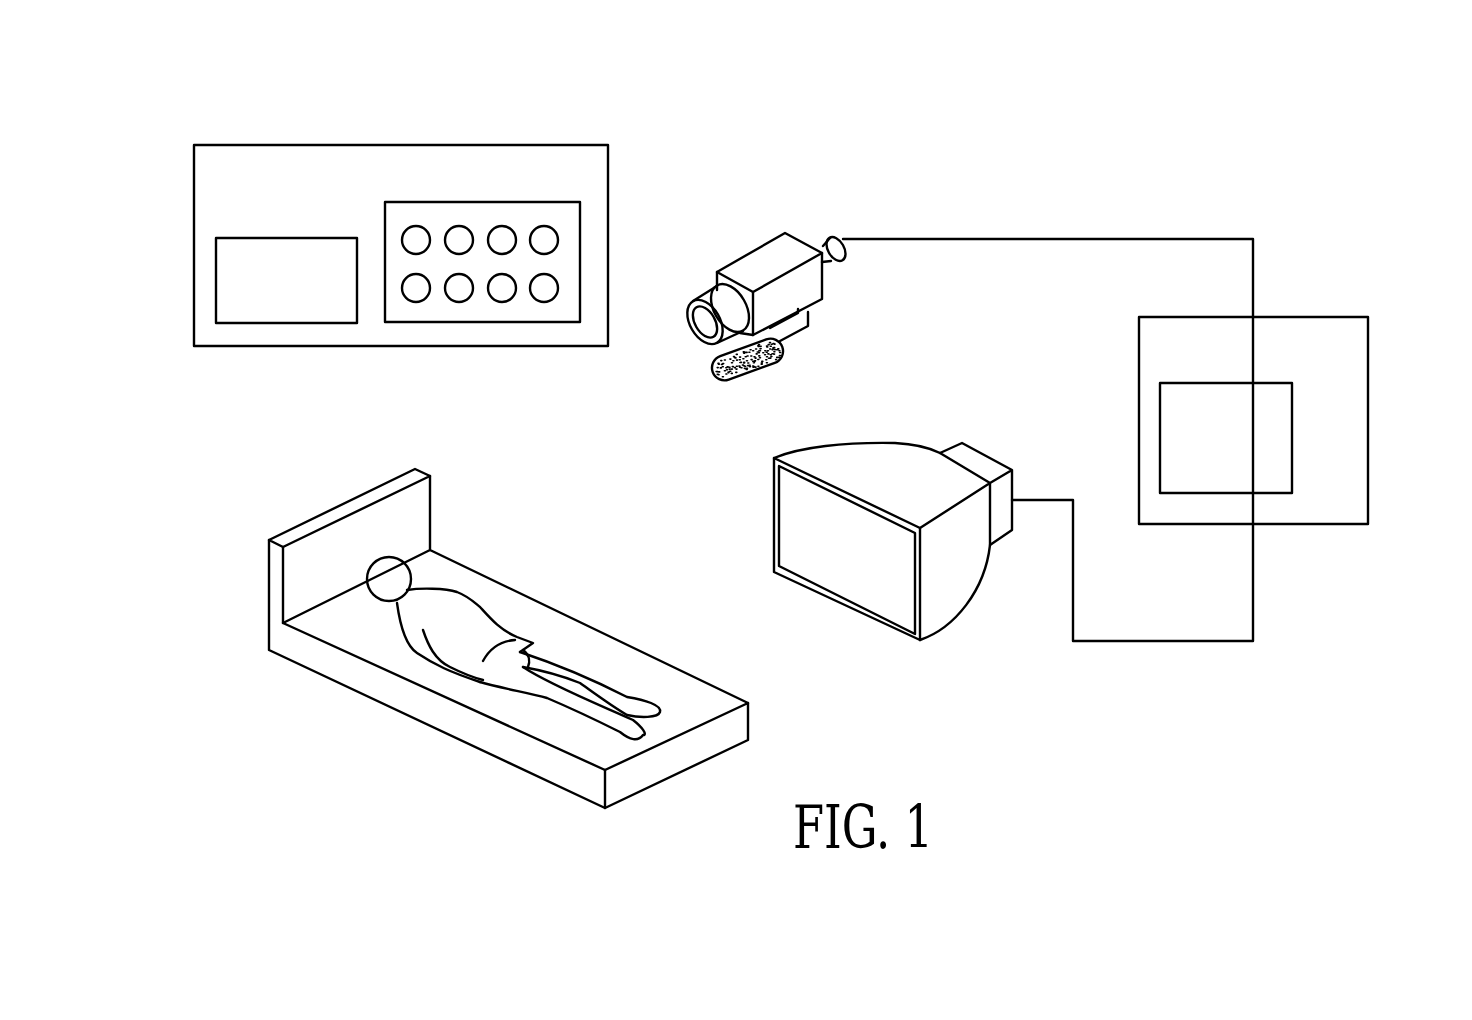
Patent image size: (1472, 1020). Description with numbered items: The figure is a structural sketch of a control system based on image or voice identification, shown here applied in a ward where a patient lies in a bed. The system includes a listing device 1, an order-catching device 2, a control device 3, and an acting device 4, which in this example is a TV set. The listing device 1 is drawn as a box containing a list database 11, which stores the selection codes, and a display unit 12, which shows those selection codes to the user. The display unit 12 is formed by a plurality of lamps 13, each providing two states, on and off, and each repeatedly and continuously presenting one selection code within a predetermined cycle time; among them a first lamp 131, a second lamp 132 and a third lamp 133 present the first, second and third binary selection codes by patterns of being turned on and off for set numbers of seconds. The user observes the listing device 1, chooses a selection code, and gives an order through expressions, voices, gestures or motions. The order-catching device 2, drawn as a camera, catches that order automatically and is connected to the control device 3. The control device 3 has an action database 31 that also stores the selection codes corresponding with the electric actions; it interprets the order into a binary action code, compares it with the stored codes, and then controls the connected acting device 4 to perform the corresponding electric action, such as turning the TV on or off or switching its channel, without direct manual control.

The listing device 1 is at (212, 152).
The list database 11 is at (215, 300).
The display unit 12 is at (523, 212).
The lamps 13 is at (468, 339).
The first lamp 131 is at (413, 295).
The second lamp 132 is at (457, 293).
The third lamp 133 is at (505, 290).
The order-catching device 2 is at (798, 248).
The control device 3 is at (1340, 323).
The action database 31 is at (1283, 460).
The acting device 4 is at (940, 617).